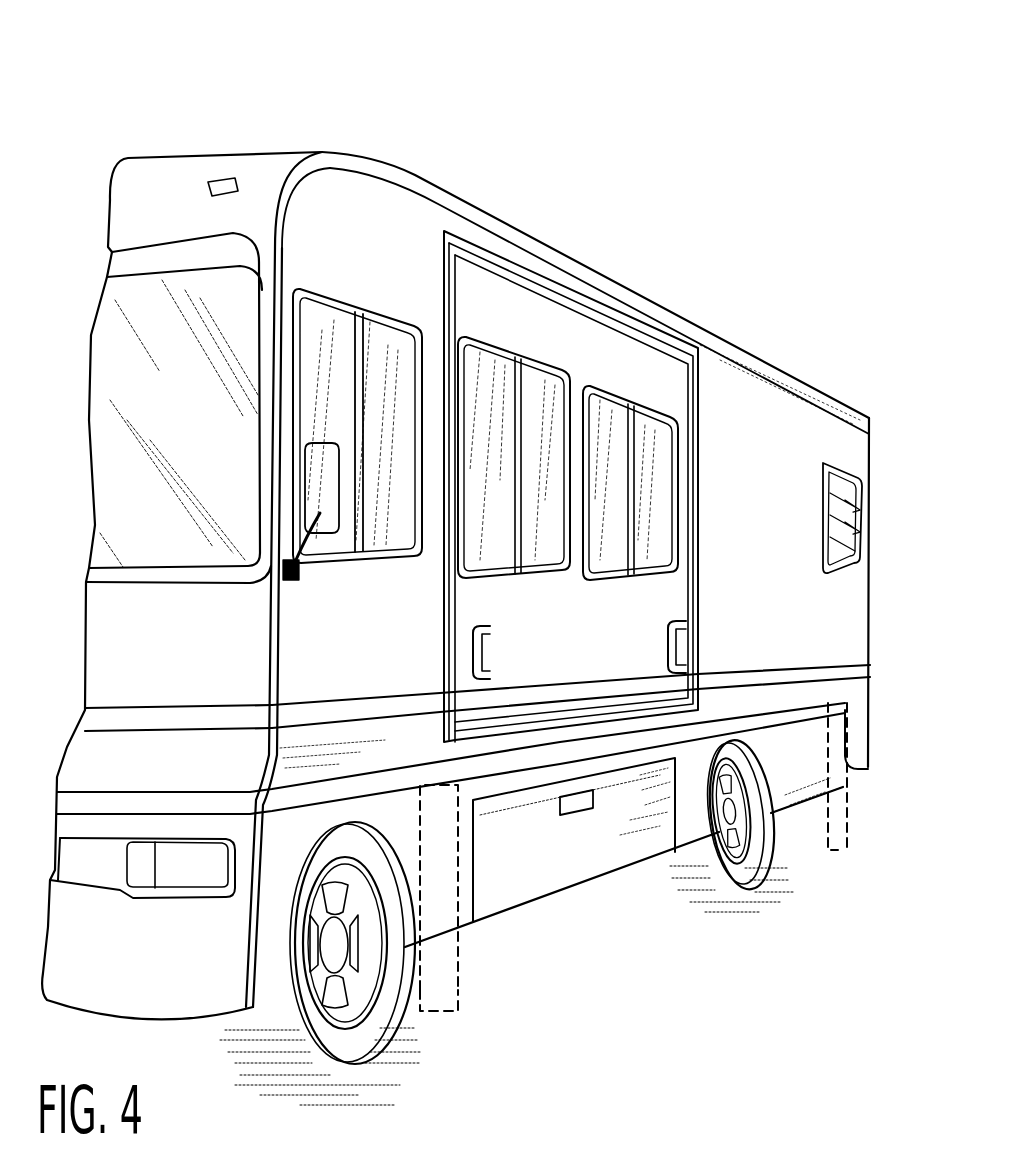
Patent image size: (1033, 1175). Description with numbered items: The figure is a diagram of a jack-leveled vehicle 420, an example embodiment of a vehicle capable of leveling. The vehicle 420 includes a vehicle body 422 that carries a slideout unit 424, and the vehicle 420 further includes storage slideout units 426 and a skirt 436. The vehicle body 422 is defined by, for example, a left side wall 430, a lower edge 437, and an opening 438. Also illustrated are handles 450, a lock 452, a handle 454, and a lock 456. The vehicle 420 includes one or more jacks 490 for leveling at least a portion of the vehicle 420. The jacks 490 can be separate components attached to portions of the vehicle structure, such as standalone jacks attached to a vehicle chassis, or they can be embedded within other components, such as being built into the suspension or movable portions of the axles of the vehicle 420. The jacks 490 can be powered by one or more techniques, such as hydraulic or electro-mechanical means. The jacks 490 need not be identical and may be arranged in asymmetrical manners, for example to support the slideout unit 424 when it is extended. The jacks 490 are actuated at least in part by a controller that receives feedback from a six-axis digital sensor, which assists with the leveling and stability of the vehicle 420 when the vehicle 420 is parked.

The vehicle 420 is at (583, 180).
The vehicle body 422 is at (181, 150).
The slideout unit 424 is at (704, 480).
The storage slideout units 426 is at (550, 868).
The left side wall 430 is at (340, 643).
The skirt 436 is at (853, 733).
The lower edge 437 is at (808, 816).
The opening 438 is at (465, 918).
The handles 450 is at (470, 622).
The lock 452 is at (584, 656).
The handle 454 is at (597, 795).
The lock 456 is at (577, 818).
The jacks 490 is at (852, 830).